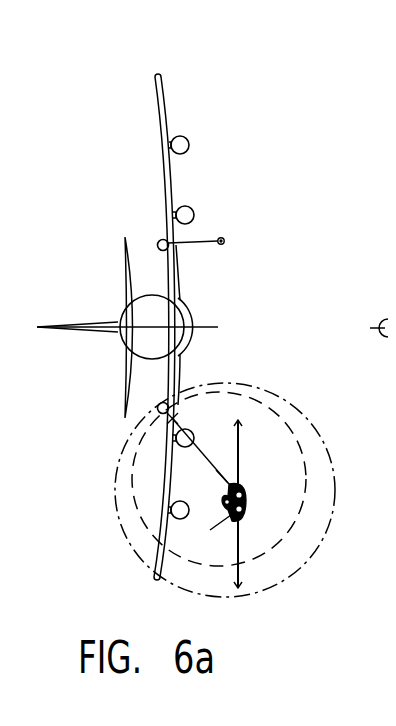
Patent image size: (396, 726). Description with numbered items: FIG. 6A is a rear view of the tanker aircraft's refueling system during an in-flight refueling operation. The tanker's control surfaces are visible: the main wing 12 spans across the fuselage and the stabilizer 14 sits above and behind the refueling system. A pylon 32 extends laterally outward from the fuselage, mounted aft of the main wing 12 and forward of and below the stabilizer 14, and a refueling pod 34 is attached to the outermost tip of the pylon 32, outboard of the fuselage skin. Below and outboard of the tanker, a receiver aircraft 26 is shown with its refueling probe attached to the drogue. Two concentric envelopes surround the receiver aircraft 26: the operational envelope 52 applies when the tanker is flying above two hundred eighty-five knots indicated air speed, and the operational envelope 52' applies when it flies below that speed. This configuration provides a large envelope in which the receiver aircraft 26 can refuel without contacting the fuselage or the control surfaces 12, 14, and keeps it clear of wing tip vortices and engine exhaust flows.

The main wing 12 is at (163, 175).
The stabilizer 14 is at (124, 268).
The pylon 32 is at (178, 278).
The refueling pod 34 is at (157, 247).
The receiver aircraft 26 is at (242, 463).
The operational envelope 52 is at (261, 479).
The operational envelope 52' is at (255, 490).